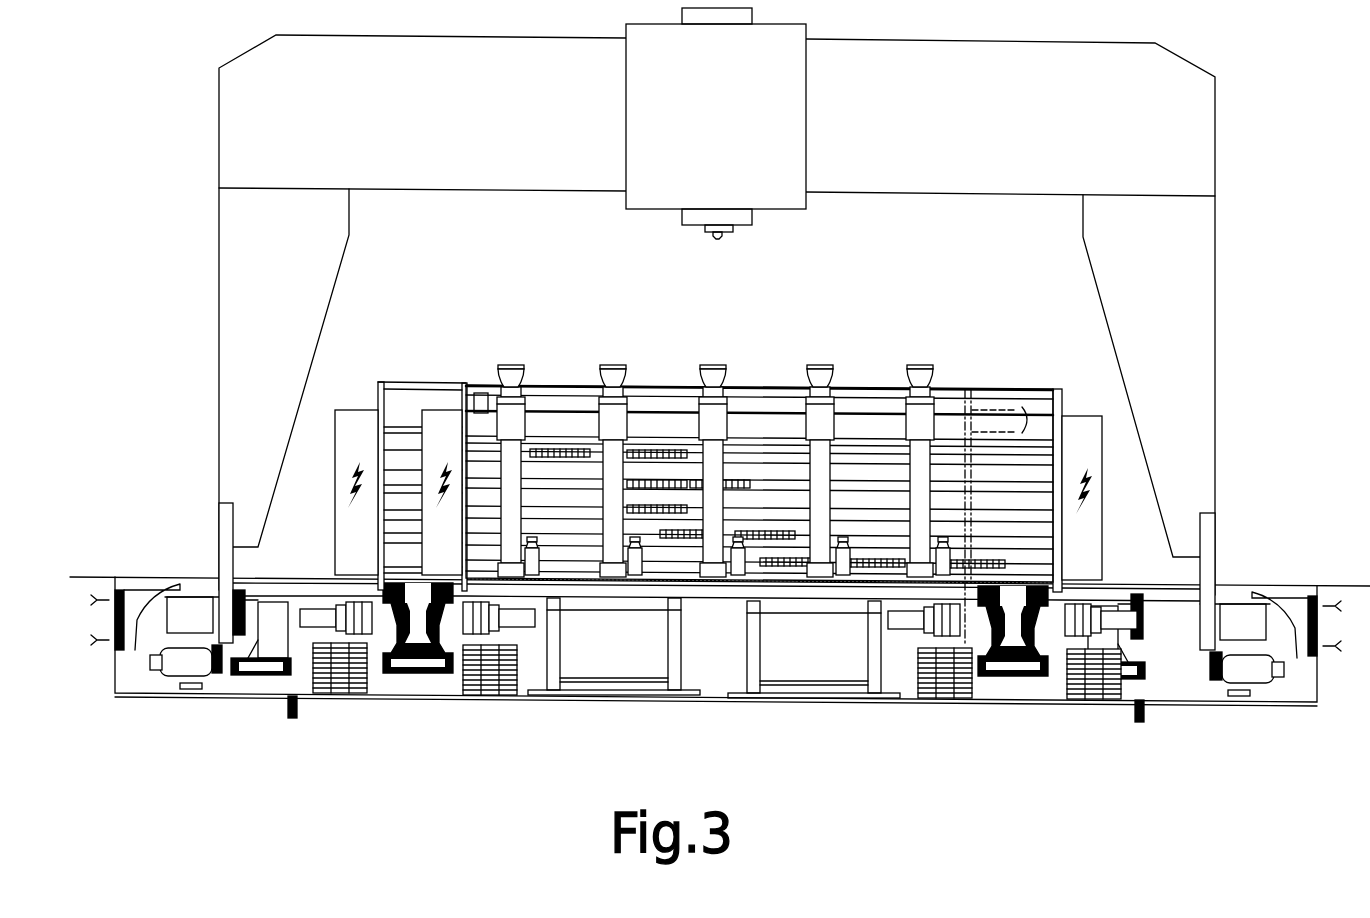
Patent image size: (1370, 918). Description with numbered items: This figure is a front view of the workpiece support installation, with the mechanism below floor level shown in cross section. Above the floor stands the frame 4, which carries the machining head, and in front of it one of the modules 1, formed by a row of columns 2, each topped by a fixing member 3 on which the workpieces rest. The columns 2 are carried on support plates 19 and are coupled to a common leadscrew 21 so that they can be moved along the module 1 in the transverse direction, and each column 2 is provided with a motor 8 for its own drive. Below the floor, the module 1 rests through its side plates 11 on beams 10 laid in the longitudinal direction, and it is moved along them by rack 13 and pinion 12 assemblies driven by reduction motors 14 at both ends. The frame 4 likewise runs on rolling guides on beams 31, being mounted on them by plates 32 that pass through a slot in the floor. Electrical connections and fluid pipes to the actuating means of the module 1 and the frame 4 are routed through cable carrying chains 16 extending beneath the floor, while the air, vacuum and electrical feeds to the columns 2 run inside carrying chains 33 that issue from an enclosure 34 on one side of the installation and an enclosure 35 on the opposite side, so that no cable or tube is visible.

The modules 1 is at (557, 423).
The columns 2 is at (825, 475).
The fixing member 3 is at (824, 372).
The frame 4 is at (513, 158).
The motor 8 is at (632, 566).
The beams 10 is at (430, 697).
The side plates of the modules 11 is at (966, 640).
The pinion 12 is at (394, 697).
The rack 13 is at (380, 597).
The reduction motor 14 is at (1140, 708).
The cable carrying chains 16 is at (333, 670).
The support plate 19 is at (732, 388).
The leadscrew 21 is at (777, 407).
The beams 31 is at (272, 688).
The side plates of the frame 32 is at (224, 557).
The cable carrying chains 33 is at (695, 533).
The enclosure 34 is at (433, 423).
The enclosure 35 is at (1075, 443).